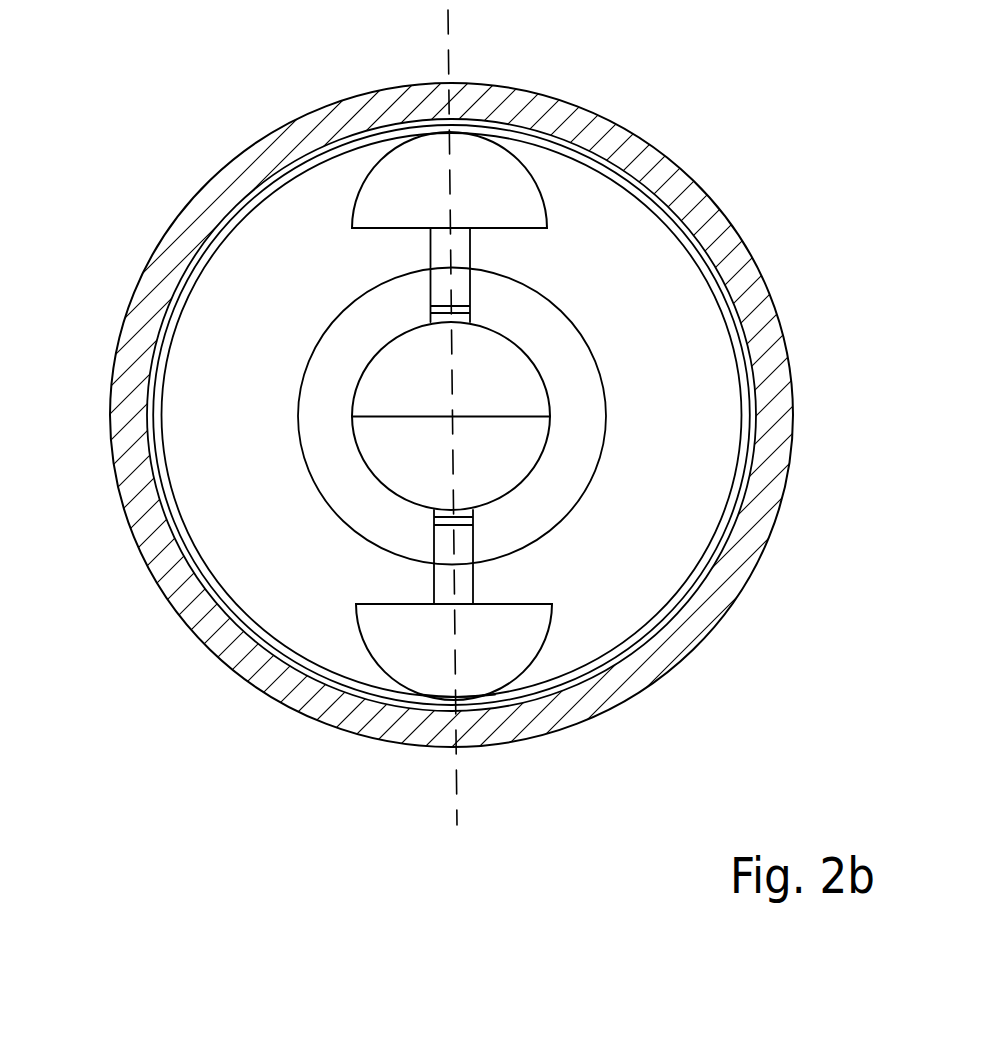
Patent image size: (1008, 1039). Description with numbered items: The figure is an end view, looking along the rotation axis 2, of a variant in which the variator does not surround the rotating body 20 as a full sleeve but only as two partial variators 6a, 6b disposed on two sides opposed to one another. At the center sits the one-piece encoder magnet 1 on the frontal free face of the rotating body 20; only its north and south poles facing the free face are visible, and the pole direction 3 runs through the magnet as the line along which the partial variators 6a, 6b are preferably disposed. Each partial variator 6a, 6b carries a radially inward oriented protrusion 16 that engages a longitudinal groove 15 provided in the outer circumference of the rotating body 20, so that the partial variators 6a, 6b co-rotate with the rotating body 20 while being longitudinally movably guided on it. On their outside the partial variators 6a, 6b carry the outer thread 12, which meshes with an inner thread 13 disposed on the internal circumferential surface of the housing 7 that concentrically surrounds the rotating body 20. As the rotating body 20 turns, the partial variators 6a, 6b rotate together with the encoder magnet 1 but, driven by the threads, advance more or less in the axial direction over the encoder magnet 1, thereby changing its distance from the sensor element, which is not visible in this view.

The encoder magnet 1 is at (367, 468).
The rotation axis 2 is at (453, 417).
The pole direction 3 is at (447, 65).
The partial variator 6a is at (547, 210).
The partial variator 6b is at (545, 638).
The housing 7 is at (220, 650).
The outer thread 12 is at (457, 698).
The inner thread 13 is at (188, 288).
The longitudinal groove 15 is at (472, 520).
The protrusion 16 is at (437, 258).
The rotating body 20 is at (587, 413).